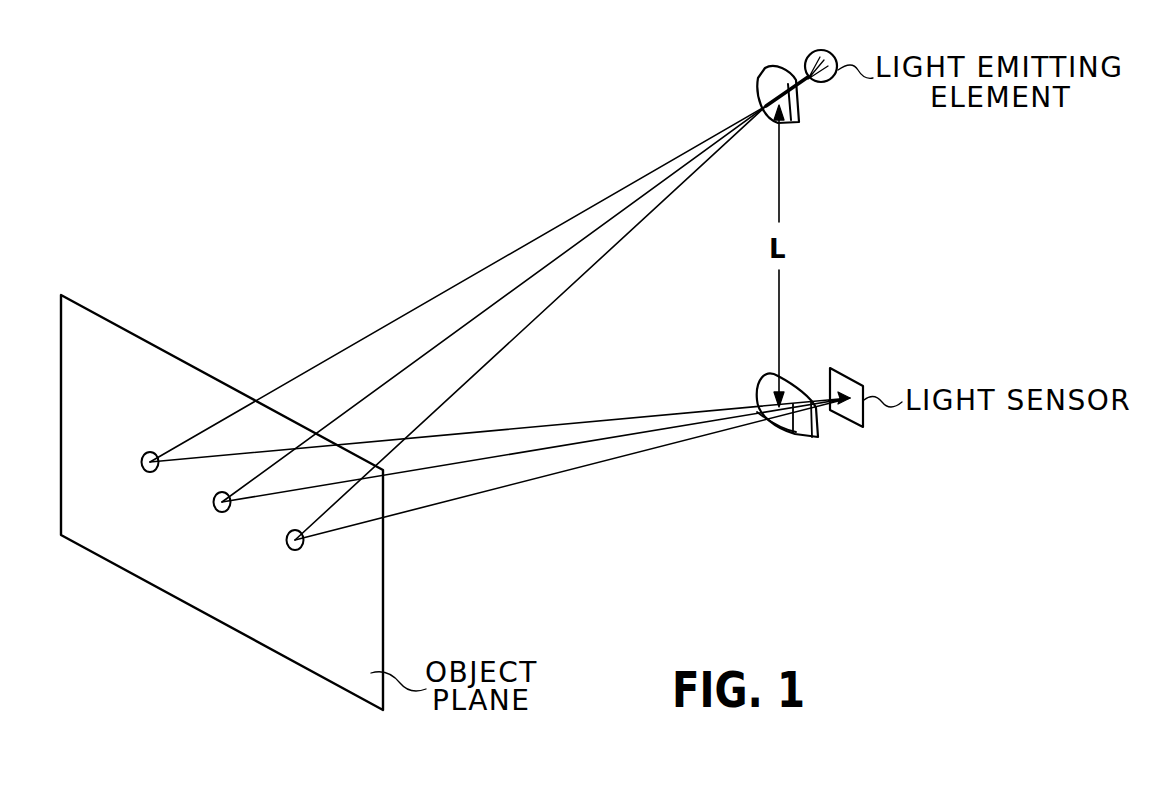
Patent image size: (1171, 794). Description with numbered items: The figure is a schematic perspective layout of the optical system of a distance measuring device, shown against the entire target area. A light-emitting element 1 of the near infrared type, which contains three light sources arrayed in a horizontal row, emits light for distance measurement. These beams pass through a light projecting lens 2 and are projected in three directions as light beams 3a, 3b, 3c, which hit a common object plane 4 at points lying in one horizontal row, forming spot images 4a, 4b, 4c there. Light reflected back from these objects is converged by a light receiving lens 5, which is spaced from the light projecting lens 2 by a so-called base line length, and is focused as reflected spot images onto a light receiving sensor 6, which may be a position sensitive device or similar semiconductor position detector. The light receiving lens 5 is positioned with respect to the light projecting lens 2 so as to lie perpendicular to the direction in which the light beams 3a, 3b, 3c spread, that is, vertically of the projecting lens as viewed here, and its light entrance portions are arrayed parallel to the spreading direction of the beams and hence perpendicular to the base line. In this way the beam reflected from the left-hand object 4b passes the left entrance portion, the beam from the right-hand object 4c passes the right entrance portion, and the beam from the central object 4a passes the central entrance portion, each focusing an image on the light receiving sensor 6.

The light-emitting element 1 is at (831, 52).
The light projecting lens 2 is at (757, 90).
The light beam 3a is at (379, 390).
The light beam 3b is at (371, 332).
The light beam 3c is at (440, 409).
The object plane 4 is at (122, 337).
The spot image 4a is at (217, 512).
The spot image 4b is at (144, 473).
The spot image 4c is at (291, 551).
The light receiving lens 5 is at (800, 440).
The light receiving sensor 6 is at (852, 418).